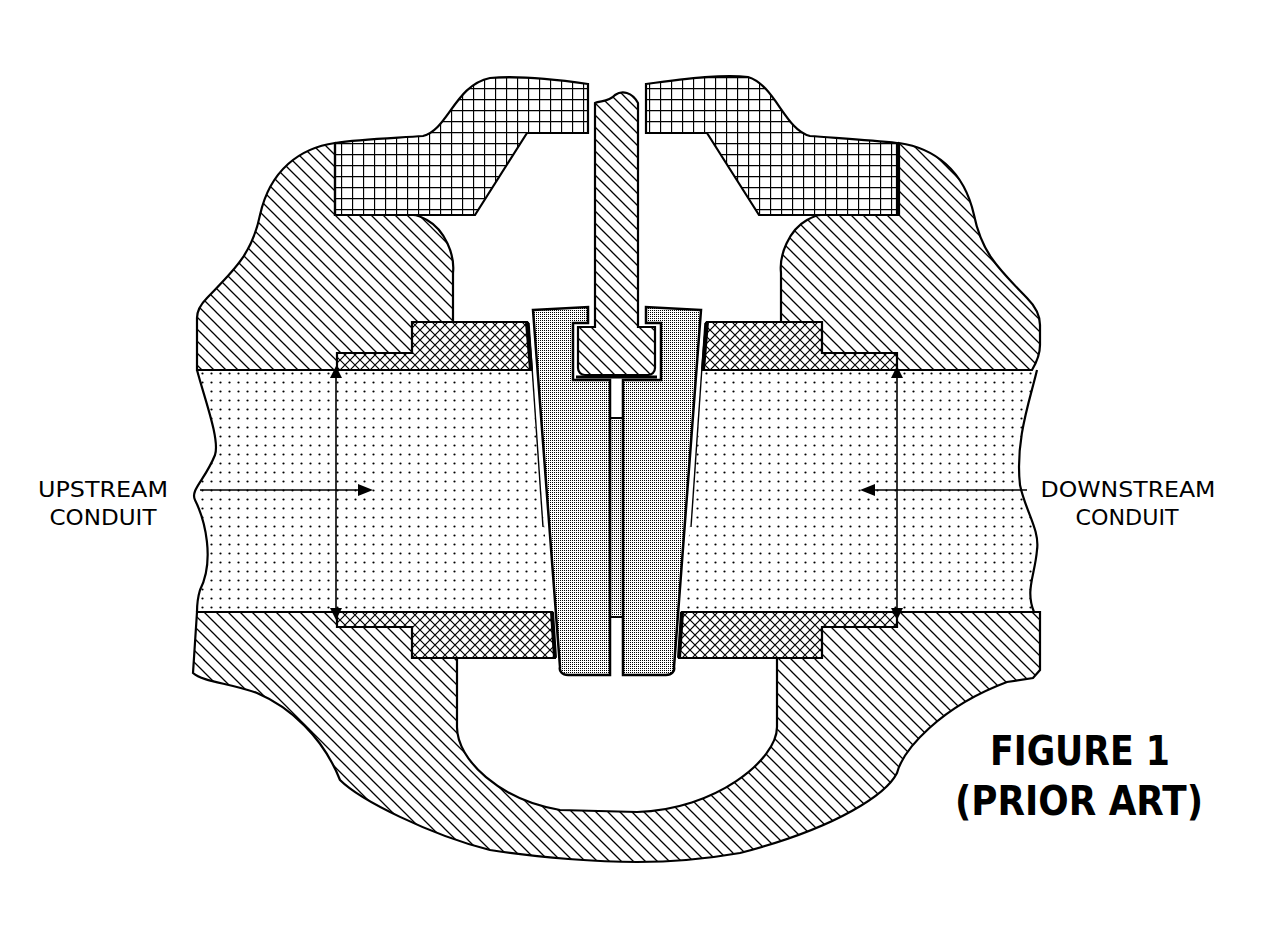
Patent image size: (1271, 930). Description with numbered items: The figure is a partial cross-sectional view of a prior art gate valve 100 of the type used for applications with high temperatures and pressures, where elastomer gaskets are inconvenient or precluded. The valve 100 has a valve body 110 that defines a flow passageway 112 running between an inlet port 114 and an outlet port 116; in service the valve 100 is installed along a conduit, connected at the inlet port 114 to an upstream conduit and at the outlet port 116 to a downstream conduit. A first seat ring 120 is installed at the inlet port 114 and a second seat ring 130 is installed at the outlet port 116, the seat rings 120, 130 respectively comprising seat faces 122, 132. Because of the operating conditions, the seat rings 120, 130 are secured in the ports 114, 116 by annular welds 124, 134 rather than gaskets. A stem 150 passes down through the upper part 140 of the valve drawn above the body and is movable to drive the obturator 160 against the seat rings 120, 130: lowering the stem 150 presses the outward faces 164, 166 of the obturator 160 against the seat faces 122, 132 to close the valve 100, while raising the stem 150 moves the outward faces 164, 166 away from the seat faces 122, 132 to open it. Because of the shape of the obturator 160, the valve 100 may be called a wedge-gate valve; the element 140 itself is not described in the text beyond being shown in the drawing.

The gate valve 100 is at (362, 123).
The valve body 110 is at (282, 197).
The flow passageway 112 is at (450, 501).
The inlet port 114 is at (200, 490).
The outlet port 116 is at (1027, 490).
The first seat ring 120 is at (464, 320).
The seat face 122 is at (534, 344).
The annular weld 124 is at (318, 364).
The second seat ring 130 is at (757, 322).
The seat face 132 is at (696, 345).
The annular weld 134 is at (910, 365).
The bonnet 140 is at (862, 133).
The stem 150 is at (638, 250).
The obturator 160 is at (620, 660).
The outward face 164 is at (550, 530).
The outward face 166 is at (684, 530).